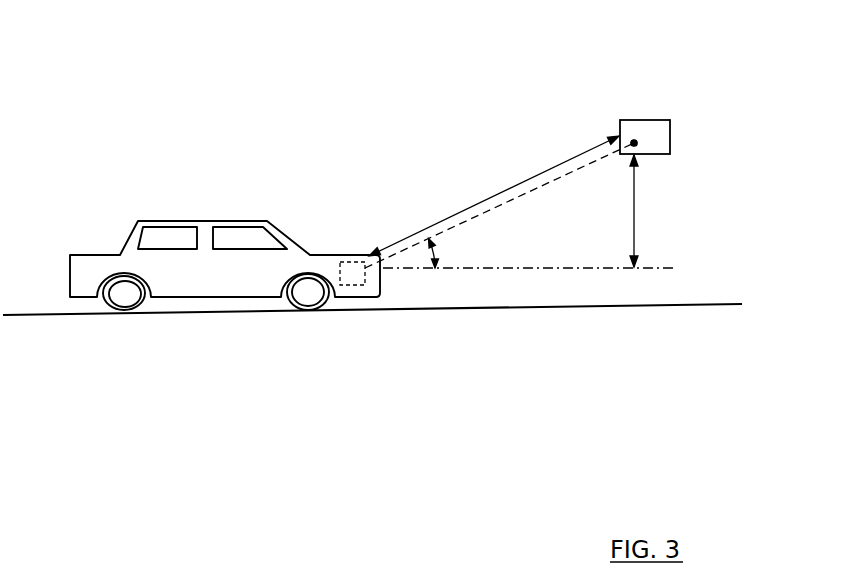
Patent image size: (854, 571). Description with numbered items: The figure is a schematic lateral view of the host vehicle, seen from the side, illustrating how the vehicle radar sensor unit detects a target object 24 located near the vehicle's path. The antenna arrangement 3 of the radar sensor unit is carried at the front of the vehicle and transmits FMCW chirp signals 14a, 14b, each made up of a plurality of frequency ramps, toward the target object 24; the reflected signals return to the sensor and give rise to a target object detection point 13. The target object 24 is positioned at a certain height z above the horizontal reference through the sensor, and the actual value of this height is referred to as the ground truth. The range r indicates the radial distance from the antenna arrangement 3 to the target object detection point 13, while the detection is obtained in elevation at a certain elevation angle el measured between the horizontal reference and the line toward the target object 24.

The antenna arrangement 3 is at (353, 286).
The target object detection point 13 is at (670, 143).
The target object 24 is at (645, 125).
The FMCW chirp signal 14a is at (570, 271).
The FMCW chirp signal 14b is at (547, 190).
The range r is at (555, 165).
The height z is at (641, 211).
The elevation angle el is at (438, 250).